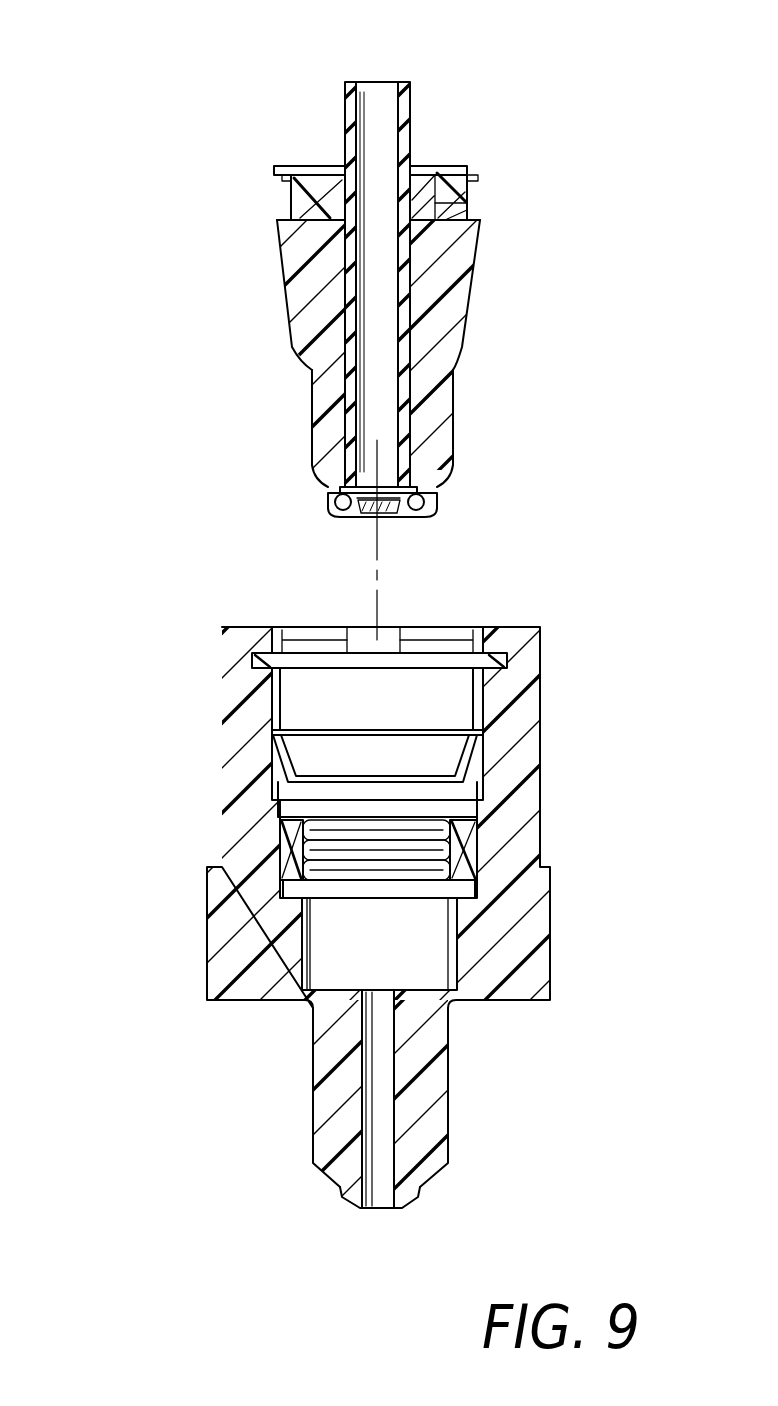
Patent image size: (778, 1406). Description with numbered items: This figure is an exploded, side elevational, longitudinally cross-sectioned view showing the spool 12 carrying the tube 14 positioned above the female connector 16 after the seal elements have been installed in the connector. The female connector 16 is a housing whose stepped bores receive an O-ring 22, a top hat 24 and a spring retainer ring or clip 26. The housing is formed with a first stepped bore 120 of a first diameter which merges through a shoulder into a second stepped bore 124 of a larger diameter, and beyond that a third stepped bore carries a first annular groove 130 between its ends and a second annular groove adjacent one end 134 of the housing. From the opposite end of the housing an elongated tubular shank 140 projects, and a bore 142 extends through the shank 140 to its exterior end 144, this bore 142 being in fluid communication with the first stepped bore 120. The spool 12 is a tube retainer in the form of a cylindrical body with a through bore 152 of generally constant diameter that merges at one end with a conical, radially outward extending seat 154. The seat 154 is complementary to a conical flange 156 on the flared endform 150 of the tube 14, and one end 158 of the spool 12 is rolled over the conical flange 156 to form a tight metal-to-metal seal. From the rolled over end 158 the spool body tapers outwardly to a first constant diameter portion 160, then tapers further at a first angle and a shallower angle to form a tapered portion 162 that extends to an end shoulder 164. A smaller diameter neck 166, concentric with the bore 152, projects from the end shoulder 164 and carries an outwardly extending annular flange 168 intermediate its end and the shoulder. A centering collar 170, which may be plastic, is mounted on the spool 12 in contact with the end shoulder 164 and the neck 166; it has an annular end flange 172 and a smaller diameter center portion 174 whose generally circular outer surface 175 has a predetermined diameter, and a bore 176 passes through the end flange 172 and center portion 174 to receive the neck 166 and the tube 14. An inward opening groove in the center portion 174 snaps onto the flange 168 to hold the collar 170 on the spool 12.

The spool 12 is at (268, 296).
The tube 14 is at (337, 90).
The female connector 16 is at (180, 835).
The O-ring 22 is at (278, 860).
The top hat 24 is at (268, 770).
The spring retainer ring or clip 26 is at (263, 647).
The first stepped bore 120 is at (463, 940).
The second stepped bore 124 is at (473, 852).
The first annular groove 130 is at (272, 732).
The one end of the housing 134 is at (520, 626).
The tubular shank 140 is at (313, 1080).
The bore 142 is at (403, 1085).
The exterior end of the shank 144 is at (358, 1210).
The flared end or endform 150 is at (425, 487).
The through bore 152 is at (408, 338).
The conical seat 154 is at (412, 519).
The conical flange 156 is at (323, 473).
The rolled over end of the spool 158 is at (335, 516).
The first constant diameter portion 160 is at (313, 400).
The tapered portion 162 is at (290, 262).
The end shoulder 164 is at (287, 218).
The neck 166 is at (423, 161).
The annular flange 168 is at (467, 203).
The centering collar 170 is at (314, 162).
The end flange 172 is at (272, 166).
The center portion 174 is at (467, 187).
The outer surface 175 is at (478, 222).
The bore 176 is at (420, 167).